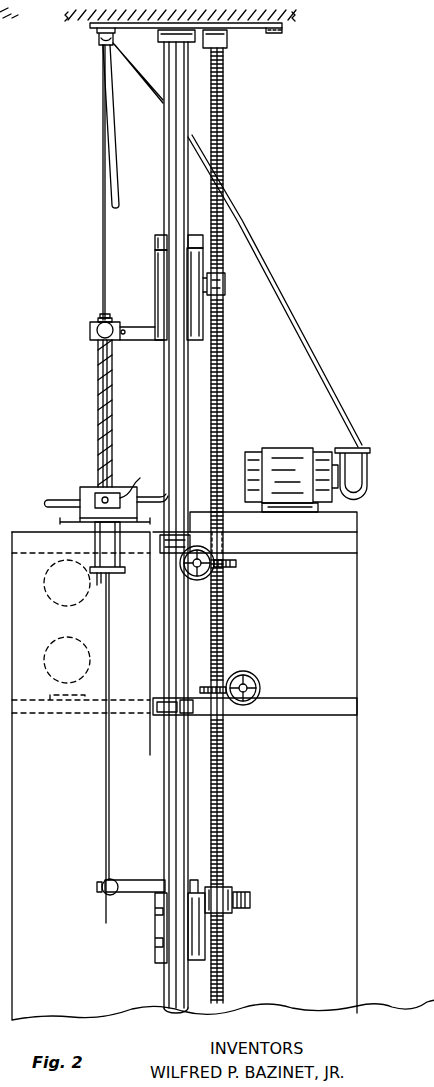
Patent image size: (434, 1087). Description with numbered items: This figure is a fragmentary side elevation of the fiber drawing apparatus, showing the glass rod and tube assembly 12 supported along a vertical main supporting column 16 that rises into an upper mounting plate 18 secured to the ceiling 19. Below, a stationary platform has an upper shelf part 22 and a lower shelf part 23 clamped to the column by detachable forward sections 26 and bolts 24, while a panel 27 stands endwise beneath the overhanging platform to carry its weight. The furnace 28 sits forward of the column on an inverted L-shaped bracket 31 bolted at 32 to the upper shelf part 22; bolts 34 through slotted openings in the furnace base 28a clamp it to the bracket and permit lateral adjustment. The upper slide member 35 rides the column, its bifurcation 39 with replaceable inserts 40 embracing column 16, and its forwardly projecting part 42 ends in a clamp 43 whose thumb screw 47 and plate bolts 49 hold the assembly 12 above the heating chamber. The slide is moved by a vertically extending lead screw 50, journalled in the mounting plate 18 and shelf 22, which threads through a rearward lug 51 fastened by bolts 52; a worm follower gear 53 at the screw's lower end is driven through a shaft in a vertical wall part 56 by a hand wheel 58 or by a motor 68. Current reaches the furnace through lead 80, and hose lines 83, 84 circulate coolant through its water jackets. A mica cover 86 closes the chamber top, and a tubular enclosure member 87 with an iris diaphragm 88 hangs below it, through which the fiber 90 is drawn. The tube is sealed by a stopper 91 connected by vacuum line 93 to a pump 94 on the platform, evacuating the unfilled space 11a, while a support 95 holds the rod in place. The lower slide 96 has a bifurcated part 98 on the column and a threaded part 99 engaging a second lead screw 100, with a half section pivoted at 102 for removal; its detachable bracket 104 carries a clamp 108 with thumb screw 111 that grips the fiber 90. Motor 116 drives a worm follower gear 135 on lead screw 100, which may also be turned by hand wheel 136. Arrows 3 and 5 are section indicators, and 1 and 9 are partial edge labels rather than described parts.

The apparatus 1 is at (5, 549).
The section line 3 is at (113, 293).
The column 5 is at (158, 445).
The ceiling 9 is at (3, 42).
The unfilled space 11a is at (100, 368).
The glass rod and tube assembly 12 is at (91, 421).
The main supporting column 16 is at (163, 793).
The upper mounting plate 18 is at (133, 30).
The ceiling 19 is at (245, 30).
The upper shelf part 22 is at (30, 555).
The lower shelf part 23 is at (45, 710).
The bolts 24 is at (164, 542).
The detachable forward sections 26 is at (176, 573).
The panel 27 is at (350, 910).
The furnace 28 is at (93, 480).
The furnace base 28a is at (90, 500).
The inverted L-shaped bracket 31 is at (65, 522).
The bolted connection 32 is at (137, 546).
The bolts 34 is at (62, 512).
The upper slide member 35 is at (209, 260).
The bifurcation 39 is at (168, 248).
The replaceable inserts 40 is at (187, 233).
The forwardly projecting part 42 is at (140, 332).
The clamp 43 is at (83, 340).
The thumb screw 47 is at (94, 324).
The bolts 49 is at (124, 334).
The lead screw 50 is at (224, 116).
The threaded lug 51 is at (284, 291).
The bolts 52 is at (226, 290).
The worm follower gear 53 is at (237, 565).
The vertical wall part 56 is at (355, 575).
The hand wheel 58 is at (210, 574).
The motor 68 is at (50, 600).
The lead 80 is at (136, 480).
The hose line 83 is at (180, 497).
The hose line 84 is at (56, 500).
The cover 86 is at (118, 486).
The tubular enclosure member 87 is at (114, 577).
The iris diaphragm 88 is at (96, 580).
The fiber 90 is at (110, 665).
The stopper 91 is at (108, 318).
The vacuum line 93 is at (106, 120).
The pump 94 is at (292, 451).
The support 95 is at (118, 385).
The lower slide 96 is at (149, 936).
The bifurcated part 98 is at (160, 898).
The threaded part 99 is at (232, 911).
The lead screw 100 is at (224, 775).
The pivot 102 is at (240, 893).
The detachable bracket 104 is at (144, 880).
The clamp 108 is at (133, 867).
The thumb screw 111 is at (101, 886).
The motor 116 is at (42, 666).
The worm follower gear 135 is at (215, 686).
The hand wheel 136 is at (262, 688).